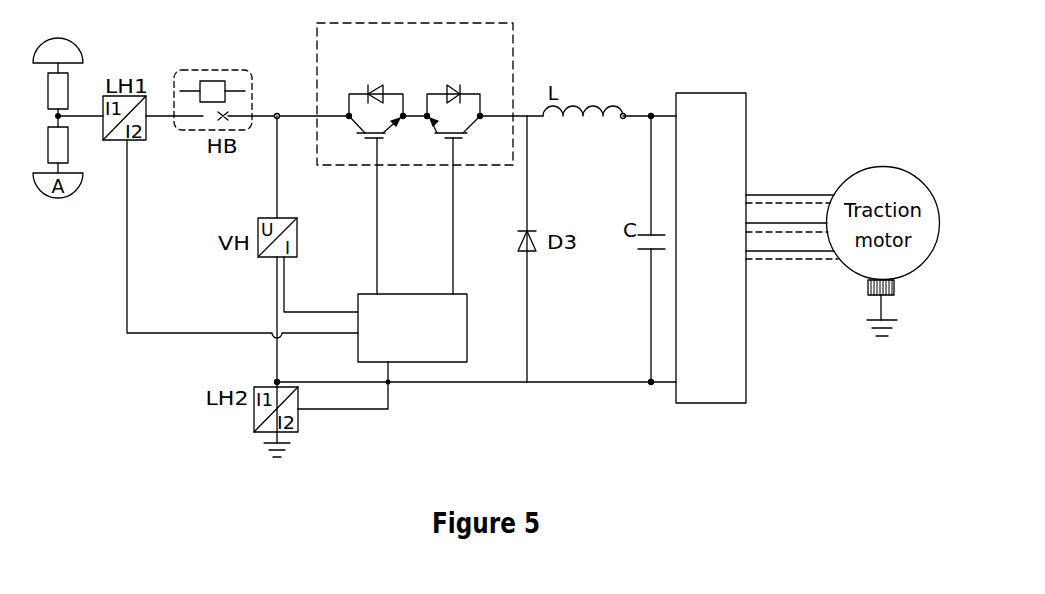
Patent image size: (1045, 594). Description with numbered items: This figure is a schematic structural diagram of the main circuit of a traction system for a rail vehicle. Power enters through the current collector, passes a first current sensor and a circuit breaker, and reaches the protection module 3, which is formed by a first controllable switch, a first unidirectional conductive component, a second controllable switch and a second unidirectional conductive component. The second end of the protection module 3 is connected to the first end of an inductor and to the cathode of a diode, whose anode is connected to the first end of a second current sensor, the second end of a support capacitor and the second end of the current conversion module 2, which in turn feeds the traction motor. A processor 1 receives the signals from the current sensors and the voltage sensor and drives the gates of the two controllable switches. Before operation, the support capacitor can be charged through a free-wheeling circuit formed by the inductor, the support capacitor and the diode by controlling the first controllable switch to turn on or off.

The processor 1 is at (422, 362).
The current conversion module 2 is at (710, 403).
The protection module 3 is at (513, 82).